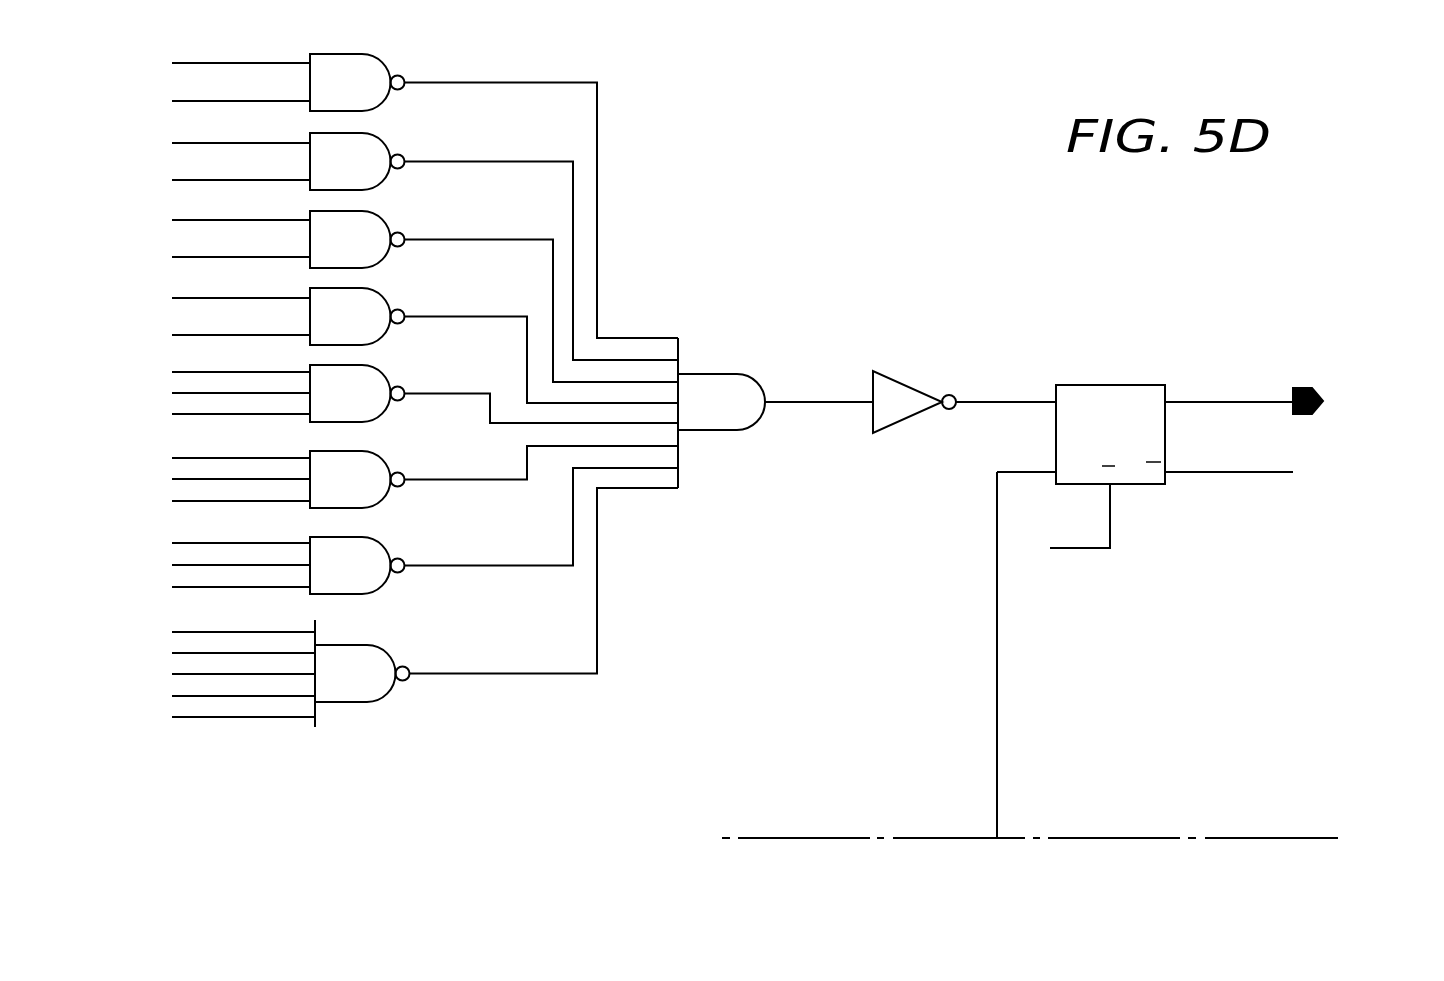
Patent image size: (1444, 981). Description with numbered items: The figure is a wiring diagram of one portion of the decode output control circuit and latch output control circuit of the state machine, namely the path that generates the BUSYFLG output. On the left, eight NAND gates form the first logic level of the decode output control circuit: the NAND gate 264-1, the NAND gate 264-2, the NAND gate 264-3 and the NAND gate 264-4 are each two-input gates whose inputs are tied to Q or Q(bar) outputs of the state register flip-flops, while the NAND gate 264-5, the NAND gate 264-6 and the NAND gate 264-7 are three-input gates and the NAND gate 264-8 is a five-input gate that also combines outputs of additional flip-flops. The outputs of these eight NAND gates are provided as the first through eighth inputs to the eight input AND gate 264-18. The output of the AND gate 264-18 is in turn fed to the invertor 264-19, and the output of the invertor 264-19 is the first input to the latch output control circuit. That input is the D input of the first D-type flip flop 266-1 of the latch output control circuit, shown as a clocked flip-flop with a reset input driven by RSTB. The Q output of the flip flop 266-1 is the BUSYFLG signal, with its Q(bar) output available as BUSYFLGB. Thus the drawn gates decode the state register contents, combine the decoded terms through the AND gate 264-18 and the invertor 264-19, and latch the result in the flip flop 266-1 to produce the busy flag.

The NAND gate 264-1 is at (353, 54).
The NAND gate 264-2 is at (363, 133).
The NAND gate 264-3 is at (363, 211).
The NAND gate 264-4 is at (363, 288).
The NAND gate 264-5 is at (363, 365).
The NAND gate 264-6 is at (363, 451).
The NAND gate 264-7 is at (365, 537).
The NAND gate 264-8 is at (370, 645).
The eight input AND gate 264-18 is at (717, 372).
The invertor 264-19 is at (885, 373).
The D-type flip flop 266-1 is at (1095, 385).